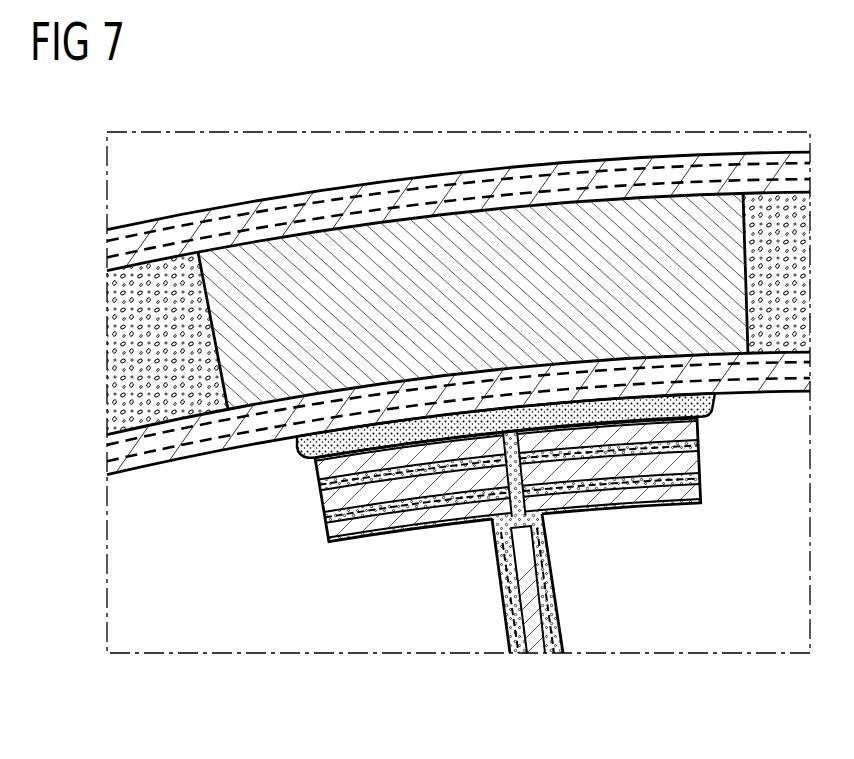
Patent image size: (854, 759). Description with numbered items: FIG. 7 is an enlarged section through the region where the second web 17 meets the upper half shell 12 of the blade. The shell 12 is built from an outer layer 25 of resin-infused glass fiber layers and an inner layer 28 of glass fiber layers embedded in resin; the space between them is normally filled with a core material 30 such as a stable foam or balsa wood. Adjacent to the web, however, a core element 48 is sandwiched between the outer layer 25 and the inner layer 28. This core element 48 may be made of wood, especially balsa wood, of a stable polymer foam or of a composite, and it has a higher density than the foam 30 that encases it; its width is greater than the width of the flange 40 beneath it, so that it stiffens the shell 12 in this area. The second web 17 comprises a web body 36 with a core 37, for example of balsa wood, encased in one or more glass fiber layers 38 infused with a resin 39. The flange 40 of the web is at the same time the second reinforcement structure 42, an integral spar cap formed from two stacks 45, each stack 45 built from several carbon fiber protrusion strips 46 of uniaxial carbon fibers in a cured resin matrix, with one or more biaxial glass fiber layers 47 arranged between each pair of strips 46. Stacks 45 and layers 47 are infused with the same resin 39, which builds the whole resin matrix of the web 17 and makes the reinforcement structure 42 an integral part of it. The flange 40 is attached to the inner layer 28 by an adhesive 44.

The upper half shell 12 is at (174, 474).
The second web 17 is at (544, 614).
The outer layer 25 is at (497, 163).
The inner layer 28 is at (117, 453).
The core material 30 is at (120, 370).
The web body 36 is at (559, 547).
The core 37 is at (541, 640).
The glass fiber layers 38 is at (513, 580).
The resin 39 is at (365, 541).
The flange 40 is at (471, 500).
The second reinforcement structure 42 is at (291, 470).
The adhesive 44 is at (712, 400).
The stack 45 is at (308, 543).
The carbon fiber protrusion strips 46 is at (340, 526).
The biaxial glass fiber layers 47 is at (683, 473).
The core element 48 is at (563, 220).